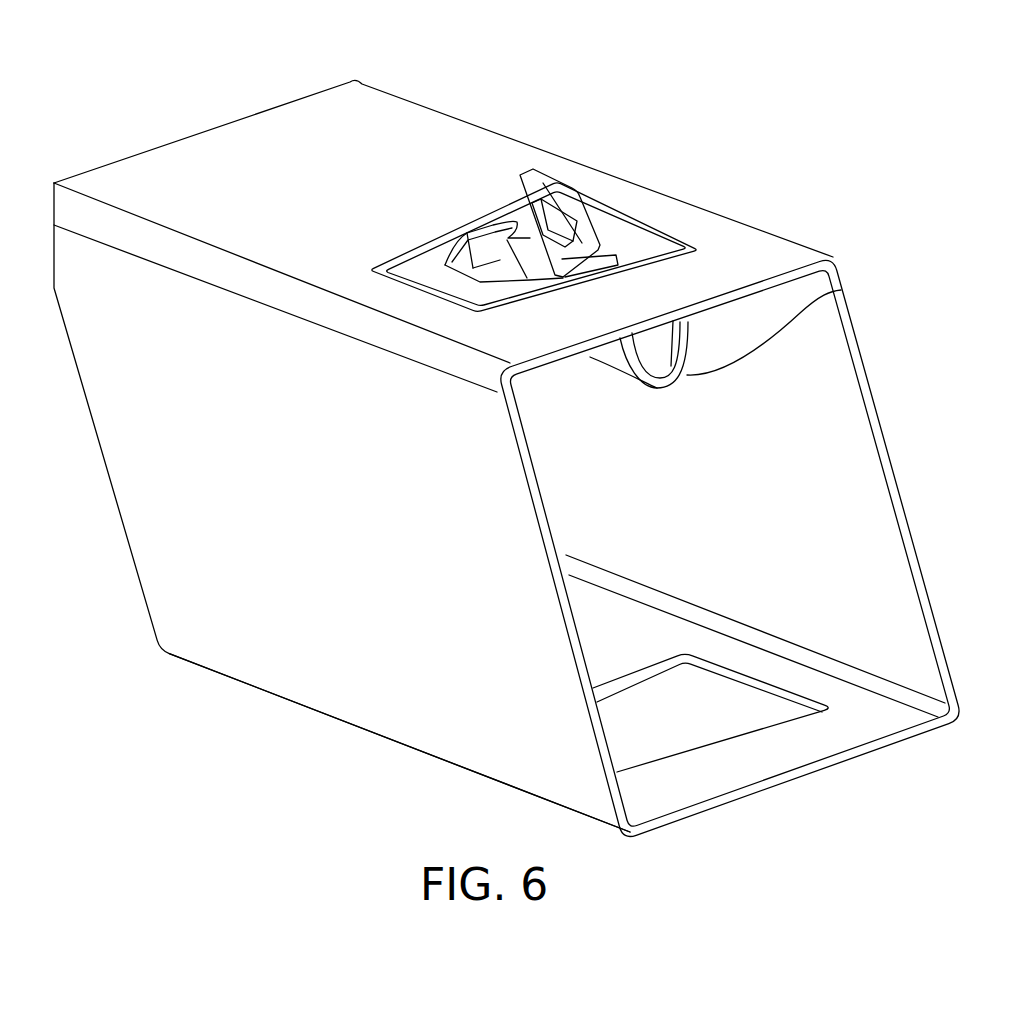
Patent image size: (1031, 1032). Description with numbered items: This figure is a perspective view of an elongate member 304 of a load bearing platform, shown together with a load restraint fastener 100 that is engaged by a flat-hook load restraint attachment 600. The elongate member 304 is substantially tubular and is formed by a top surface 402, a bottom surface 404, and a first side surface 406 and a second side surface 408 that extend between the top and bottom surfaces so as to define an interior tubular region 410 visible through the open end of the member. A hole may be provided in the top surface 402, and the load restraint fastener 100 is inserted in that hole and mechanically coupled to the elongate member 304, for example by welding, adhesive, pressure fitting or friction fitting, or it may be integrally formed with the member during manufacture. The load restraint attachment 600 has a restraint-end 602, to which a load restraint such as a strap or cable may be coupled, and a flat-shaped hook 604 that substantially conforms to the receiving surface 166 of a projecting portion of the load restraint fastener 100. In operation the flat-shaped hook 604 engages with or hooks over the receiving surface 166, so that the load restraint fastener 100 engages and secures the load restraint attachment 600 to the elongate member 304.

The load restraint fastener 100 is at (636, 268).
The receiving surface 166 is at (692, 322).
The elongate member 304 is at (272, 694).
The top surface 402 is at (387, 112).
The bottom surface 404 is at (708, 812).
The first side surface 406 is at (600, 745).
The second side surface 408 is at (913, 528).
The interior tubular region 410 is at (845, 695).
The load restraint attachment 600 is at (589, 189).
The restraint-end 602 is at (542, 192).
The flat-shaped hook 604 is at (845, 291).